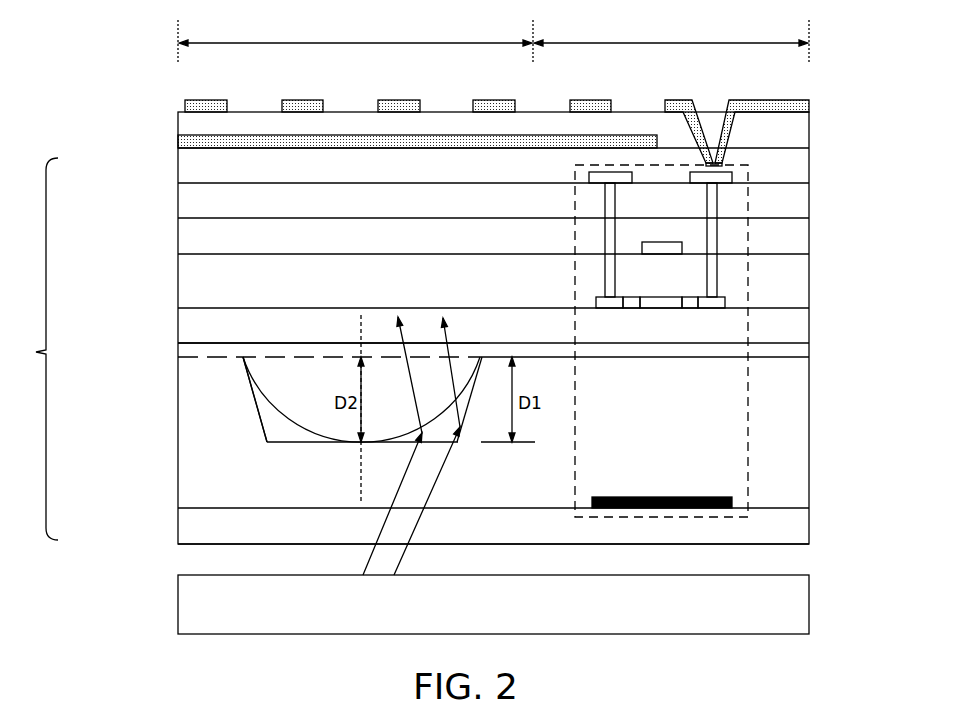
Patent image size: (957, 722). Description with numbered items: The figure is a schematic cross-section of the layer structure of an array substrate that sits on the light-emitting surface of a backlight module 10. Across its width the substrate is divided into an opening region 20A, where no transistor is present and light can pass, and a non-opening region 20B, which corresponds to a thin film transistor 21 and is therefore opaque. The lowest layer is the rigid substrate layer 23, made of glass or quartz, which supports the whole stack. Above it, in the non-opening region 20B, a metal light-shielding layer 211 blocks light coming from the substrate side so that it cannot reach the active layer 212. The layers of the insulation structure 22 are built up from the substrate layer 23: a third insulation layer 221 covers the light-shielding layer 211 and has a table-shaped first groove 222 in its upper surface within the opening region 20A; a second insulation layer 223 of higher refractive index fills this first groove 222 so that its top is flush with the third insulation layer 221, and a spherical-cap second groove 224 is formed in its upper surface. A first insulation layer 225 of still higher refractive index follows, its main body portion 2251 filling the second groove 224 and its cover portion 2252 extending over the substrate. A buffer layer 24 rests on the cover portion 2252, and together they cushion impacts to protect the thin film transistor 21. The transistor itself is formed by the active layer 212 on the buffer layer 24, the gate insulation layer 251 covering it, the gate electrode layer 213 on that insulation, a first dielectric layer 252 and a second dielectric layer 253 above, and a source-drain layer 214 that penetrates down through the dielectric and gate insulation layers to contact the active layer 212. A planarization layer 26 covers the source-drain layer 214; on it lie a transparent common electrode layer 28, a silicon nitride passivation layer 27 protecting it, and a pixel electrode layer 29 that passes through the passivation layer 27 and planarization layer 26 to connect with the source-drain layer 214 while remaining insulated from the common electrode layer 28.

The backlight module 10 is at (809, 604).
The opening region 20A is at (355, 38).
The non-opening region 20B is at (671, 38).
The thin film transistor 21 is at (748, 410).
The light-shielding layer 211 is at (664, 497).
The active layer 212 is at (725, 302).
The gate electrode layer 213 is at (682, 248).
The source-drain layer 214 is at (733, 178).
The insulation structure 22 is at (32, 349).
The third insulation layer 221 is at (178, 437).
The first groove 222 is at (297, 443).
The second insulation layer 223 is at (267, 415).
The second groove 224 is at (288, 420).
The first insulation layer 225 is at (178, 355).
The main body portion 2251 is at (267, 378).
The cover portion 2252 is at (208, 348).
The substrate layer 23 is at (178, 530).
The buffer layer 24 is at (188, 322).
The gate insulation layer 251 is at (178, 277).
The first dielectric layer 252 is at (178, 240).
The second dielectric layer 253 is at (178, 206).
The planarization layer 26 is at (178, 173).
The passivation layer 27 is at (178, 125).
The common electrode layer 28 is at (178, 147).
The pixel electrode layer 29 is at (809, 106).